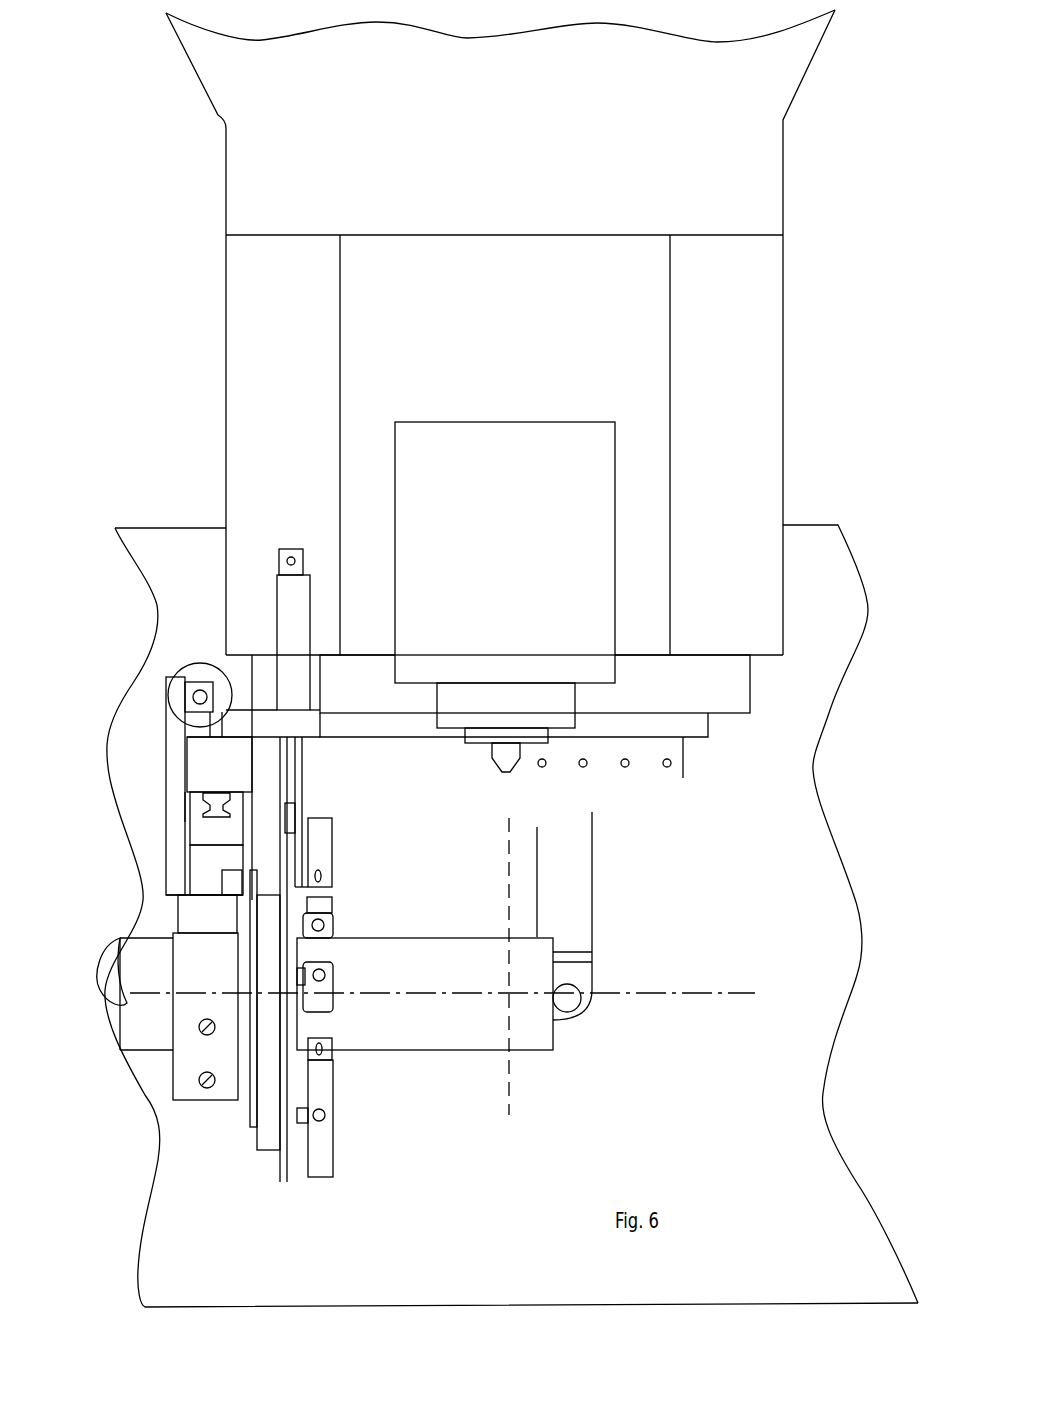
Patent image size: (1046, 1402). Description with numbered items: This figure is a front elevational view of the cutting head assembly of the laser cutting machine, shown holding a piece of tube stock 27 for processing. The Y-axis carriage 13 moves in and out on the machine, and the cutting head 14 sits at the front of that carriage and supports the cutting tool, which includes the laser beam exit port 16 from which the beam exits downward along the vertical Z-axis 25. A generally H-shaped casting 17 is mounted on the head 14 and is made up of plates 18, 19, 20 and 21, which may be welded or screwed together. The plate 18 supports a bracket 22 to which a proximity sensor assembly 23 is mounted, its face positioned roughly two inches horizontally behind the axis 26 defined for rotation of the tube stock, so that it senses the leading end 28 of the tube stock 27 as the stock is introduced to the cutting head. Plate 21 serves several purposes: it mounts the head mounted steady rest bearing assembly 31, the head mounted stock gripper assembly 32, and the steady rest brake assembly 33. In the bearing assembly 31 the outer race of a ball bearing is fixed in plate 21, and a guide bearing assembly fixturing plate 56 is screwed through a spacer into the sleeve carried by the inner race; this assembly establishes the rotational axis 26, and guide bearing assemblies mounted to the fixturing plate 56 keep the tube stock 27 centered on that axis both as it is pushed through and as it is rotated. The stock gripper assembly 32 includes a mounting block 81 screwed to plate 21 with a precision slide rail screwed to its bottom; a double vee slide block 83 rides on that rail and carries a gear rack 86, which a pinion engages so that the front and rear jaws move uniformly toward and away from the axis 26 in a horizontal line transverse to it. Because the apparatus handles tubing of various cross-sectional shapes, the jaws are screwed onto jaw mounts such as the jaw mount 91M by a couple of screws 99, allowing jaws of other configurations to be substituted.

The Y-axis carriage 13 is at (437, 165).
The cutting head 14 is at (452, 382).
The steady rest brake assembly 33 is at (247, 568).
The H-shaped casting 17 is at (718, 685).
The plate 20 is at (700, 728).
The laser beam exit port 16 is at (505, 772).
The plate 18 is at (333, 895).
The bracket 22 is at (572, 902).
The proximity sensor assembly 23 is at (582, 1000).
The leading end of the tube stock 28 is at (557, 1032).
The tube stock 27 is at (432, 1033).
The Z-axis 25 is at (513, 1088).
The axis 26 is at (742, 990).
The plate 19 is at (277, 764).
The mounting block 81 is at (212, 760).
The double vee slide block 83 is at (203, 865).
The gear rack 86 is at (230, 885).
The jaw mount 91M is at (182, 1090).
The screws 99 is at (201, 1031).
The head mounted stock gripper assembly 32 is at (162, 1118).
The plate 21 is at (267, 1133).
The guide bearing assembly fixturing plate 56 is at (293, 1160).
The head mounted steady rest bearing assembly 31 is at (378, 1180).